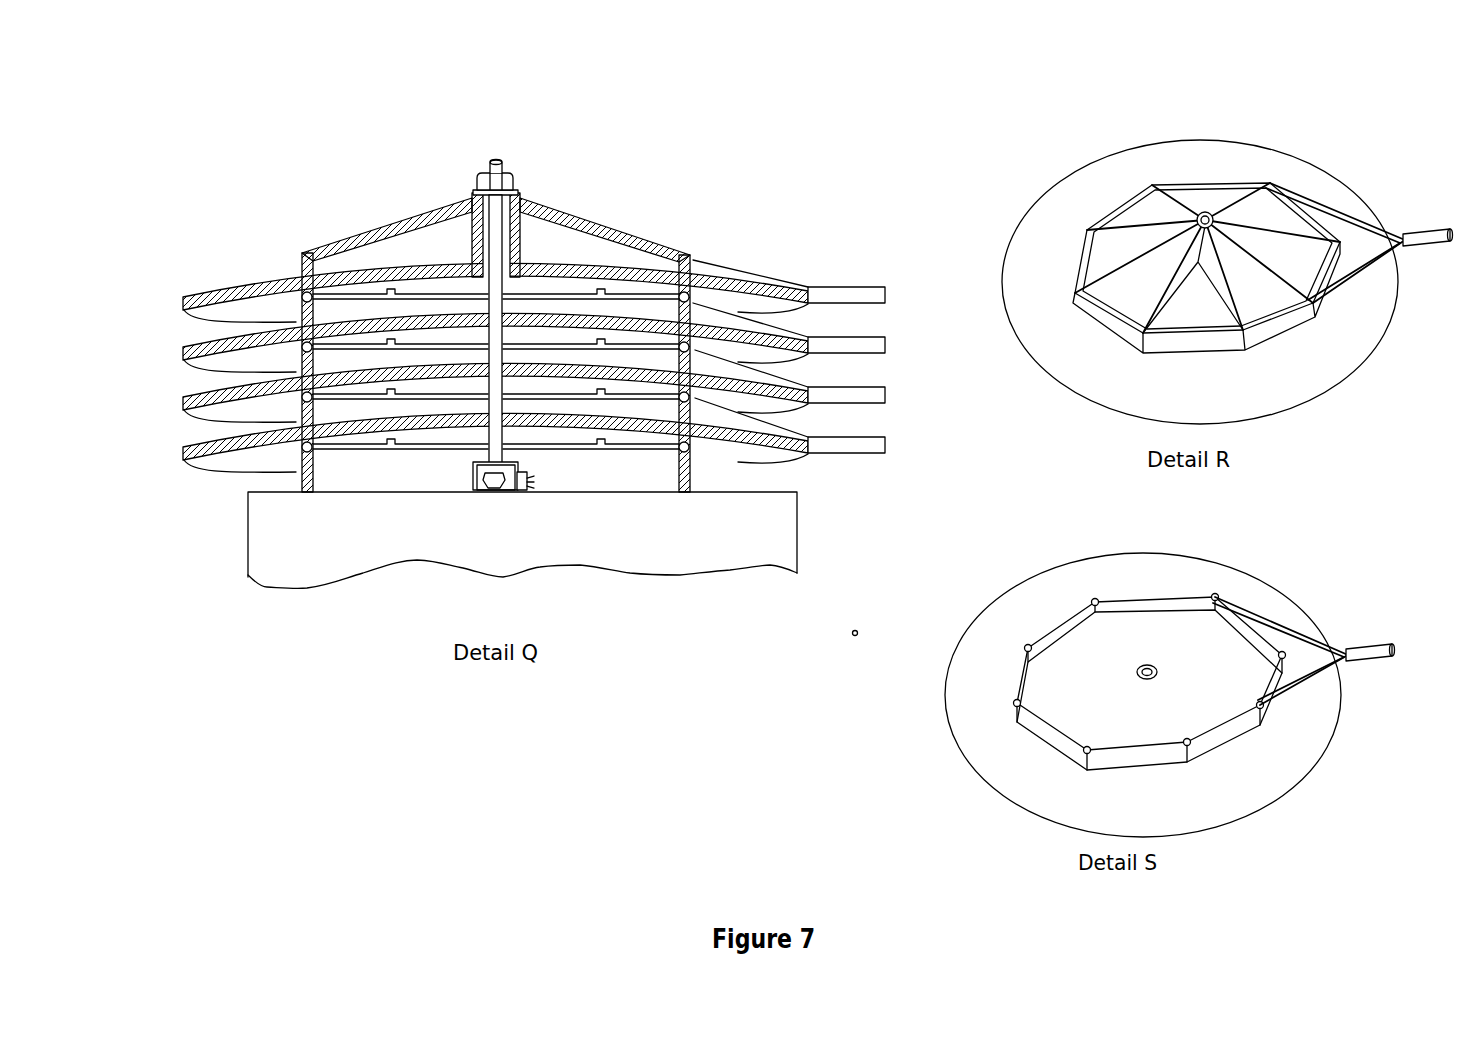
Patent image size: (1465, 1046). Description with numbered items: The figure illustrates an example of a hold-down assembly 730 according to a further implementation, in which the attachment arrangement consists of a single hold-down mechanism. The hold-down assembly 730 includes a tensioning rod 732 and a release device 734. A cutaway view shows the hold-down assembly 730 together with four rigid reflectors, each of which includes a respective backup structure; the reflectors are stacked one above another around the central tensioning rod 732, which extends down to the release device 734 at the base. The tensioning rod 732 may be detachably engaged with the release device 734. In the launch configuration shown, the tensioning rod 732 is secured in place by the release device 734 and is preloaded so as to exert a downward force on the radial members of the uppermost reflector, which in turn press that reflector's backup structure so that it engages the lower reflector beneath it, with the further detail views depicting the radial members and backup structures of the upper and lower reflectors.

The hold-down assembly 730 is at (430, 156).
The tensioning rod 732 is at (492, 277).
The release device 734 is at (510, 475).